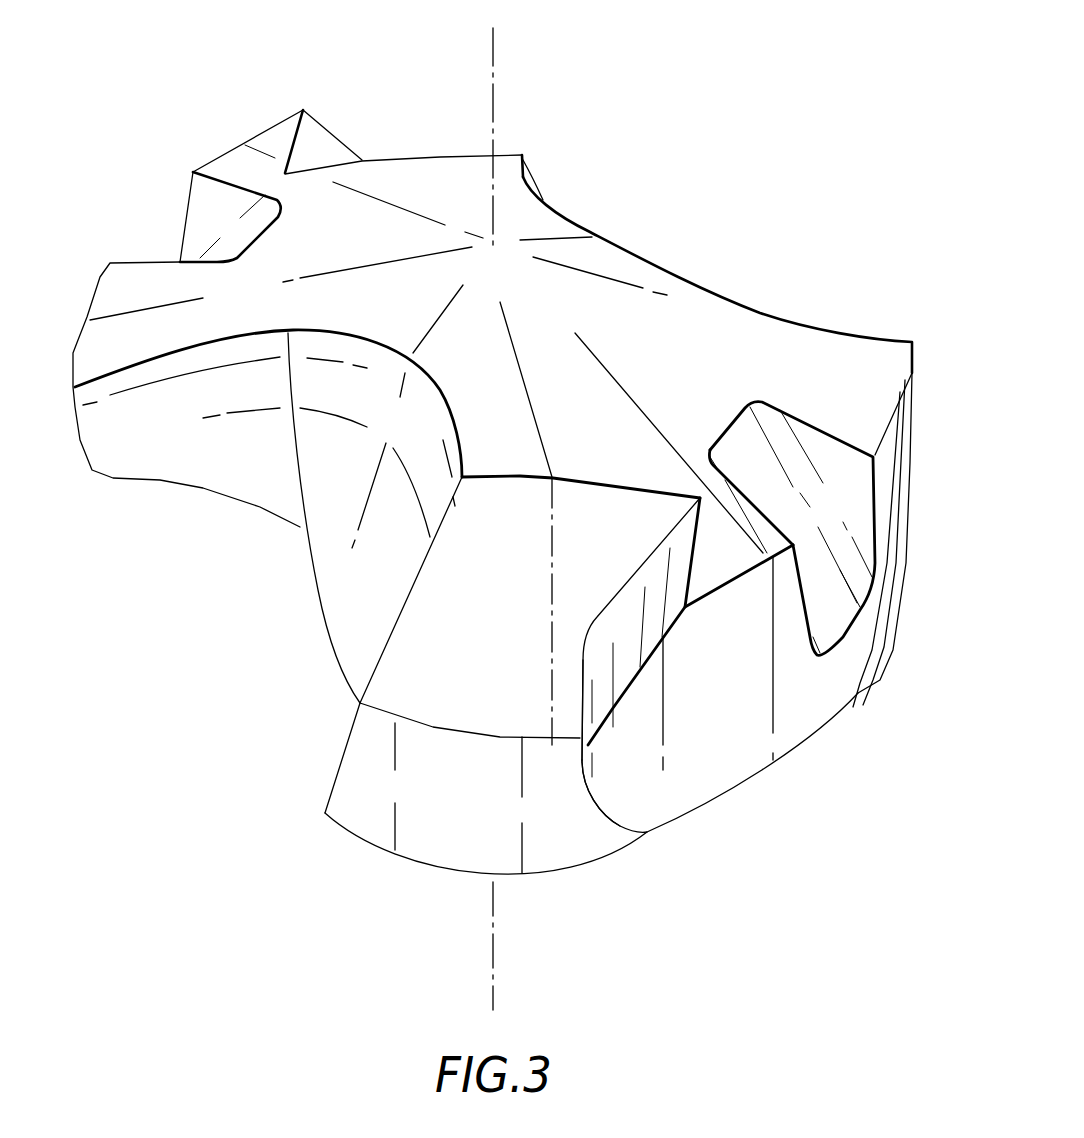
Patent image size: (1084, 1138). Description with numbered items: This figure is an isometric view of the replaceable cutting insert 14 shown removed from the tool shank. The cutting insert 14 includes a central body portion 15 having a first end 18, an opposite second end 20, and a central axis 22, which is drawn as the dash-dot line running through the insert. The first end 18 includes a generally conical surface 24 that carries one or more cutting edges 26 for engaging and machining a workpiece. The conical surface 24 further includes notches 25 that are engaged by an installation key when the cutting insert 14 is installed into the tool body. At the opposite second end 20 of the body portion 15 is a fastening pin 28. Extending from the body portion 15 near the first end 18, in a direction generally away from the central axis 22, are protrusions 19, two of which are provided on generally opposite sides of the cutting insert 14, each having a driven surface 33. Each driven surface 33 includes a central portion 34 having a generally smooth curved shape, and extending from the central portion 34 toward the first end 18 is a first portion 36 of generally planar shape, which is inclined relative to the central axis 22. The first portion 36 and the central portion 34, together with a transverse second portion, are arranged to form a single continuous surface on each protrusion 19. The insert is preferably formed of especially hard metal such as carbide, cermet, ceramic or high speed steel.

The cutting insert 14 is at (788, 126).
The central body portion 15 is at (422, 575).
The first end 18 is at (528, 139).
The protrusion 19 is at (234, 142).
The second end 20 is at (539, 895).
The central axis 22 is at (495, 50).
The conical surface 24 is at (430, 183).
The notch 25 is at (151, 202).
The cutting edge 26 is at (688, 285).
The fastening pin 28 is at (428, 840).
The driven surface 33 is at (566, 699).
The central portion 34 is at (582, 745).
The first portion 36 is at (328, 166).